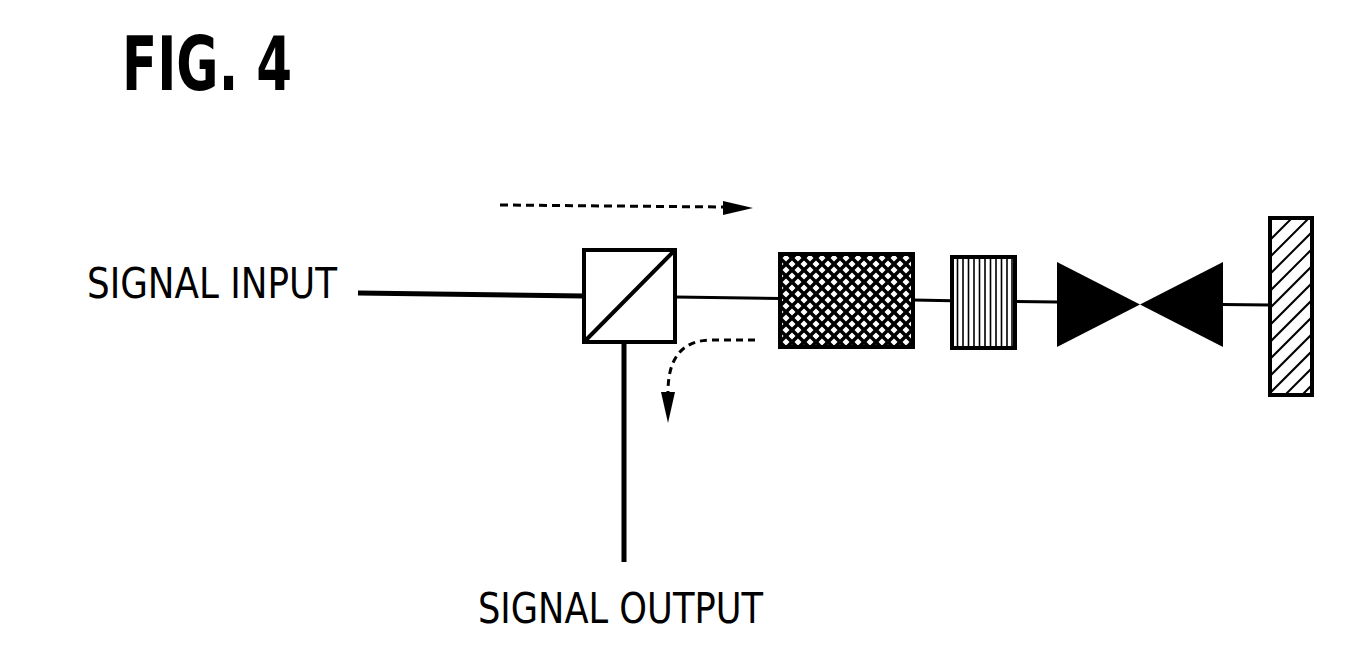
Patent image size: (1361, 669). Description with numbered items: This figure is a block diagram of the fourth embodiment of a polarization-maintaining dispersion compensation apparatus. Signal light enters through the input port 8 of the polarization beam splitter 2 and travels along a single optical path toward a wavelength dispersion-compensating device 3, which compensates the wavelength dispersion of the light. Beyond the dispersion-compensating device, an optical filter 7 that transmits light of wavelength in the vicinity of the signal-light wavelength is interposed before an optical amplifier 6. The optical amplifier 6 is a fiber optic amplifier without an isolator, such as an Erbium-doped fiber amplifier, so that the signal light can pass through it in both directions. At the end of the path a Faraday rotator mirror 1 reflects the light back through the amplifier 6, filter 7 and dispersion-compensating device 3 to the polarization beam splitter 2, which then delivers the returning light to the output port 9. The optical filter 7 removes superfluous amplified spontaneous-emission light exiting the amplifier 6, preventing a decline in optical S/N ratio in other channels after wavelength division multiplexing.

The Faraday rotator mirror 1 is at (1308, 218).
The polarization beam splitter 2 is at (584, 332).
The wavelength dispersion-compensating device 3 is at (842, 254).
The optical amplifier 6 is at (1095, 277).
The optical filter 7 is at (1000, 257).
The input port 8 is at (373, 288).
The output port 9 is at (623, 493).